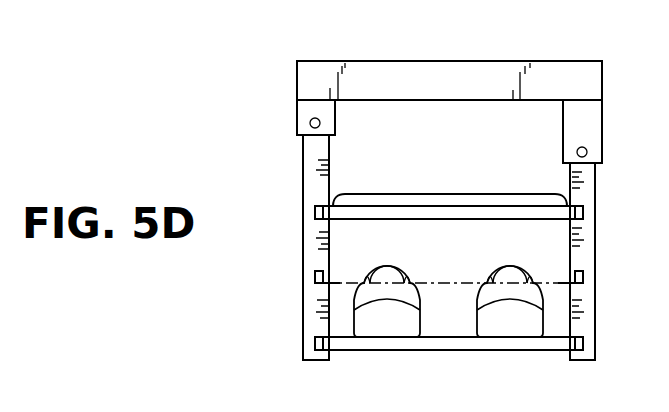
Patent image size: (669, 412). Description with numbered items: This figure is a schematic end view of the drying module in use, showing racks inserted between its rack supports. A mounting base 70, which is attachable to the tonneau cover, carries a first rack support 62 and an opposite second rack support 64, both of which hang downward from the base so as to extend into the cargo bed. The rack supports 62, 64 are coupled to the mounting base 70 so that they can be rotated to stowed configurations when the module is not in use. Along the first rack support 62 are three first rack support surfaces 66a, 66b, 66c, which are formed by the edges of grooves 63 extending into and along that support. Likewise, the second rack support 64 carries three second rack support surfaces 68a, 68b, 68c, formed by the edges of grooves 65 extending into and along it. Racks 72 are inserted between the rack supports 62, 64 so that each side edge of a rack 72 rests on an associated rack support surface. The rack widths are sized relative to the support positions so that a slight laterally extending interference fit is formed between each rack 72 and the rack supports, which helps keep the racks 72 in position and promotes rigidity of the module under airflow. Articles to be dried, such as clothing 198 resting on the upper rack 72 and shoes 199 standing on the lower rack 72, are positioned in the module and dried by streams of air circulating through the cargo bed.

The mounting base 70 is at (520, 74).
The clothing 198 is at (520, 200).
The first rack support 62 is at (303, 215).
The second rack support 64 is at (595, 172).
The first rack support surface 66a is at (318, 208).
The first rack support surface 66b is at (317, 278).
The first rack support surface 66c is at (317, 342).
The second rack support surface 68a is at (583, 212).
The second rack support surface 68b is at (583, 278).
The second rack support surface 68c is at (583, 342).
The rack 72 is at (385, 210).
The groove 63 is at (313, 338).
The groove 65 is at (595, 345).
The shoes 199 is at (507, 320).